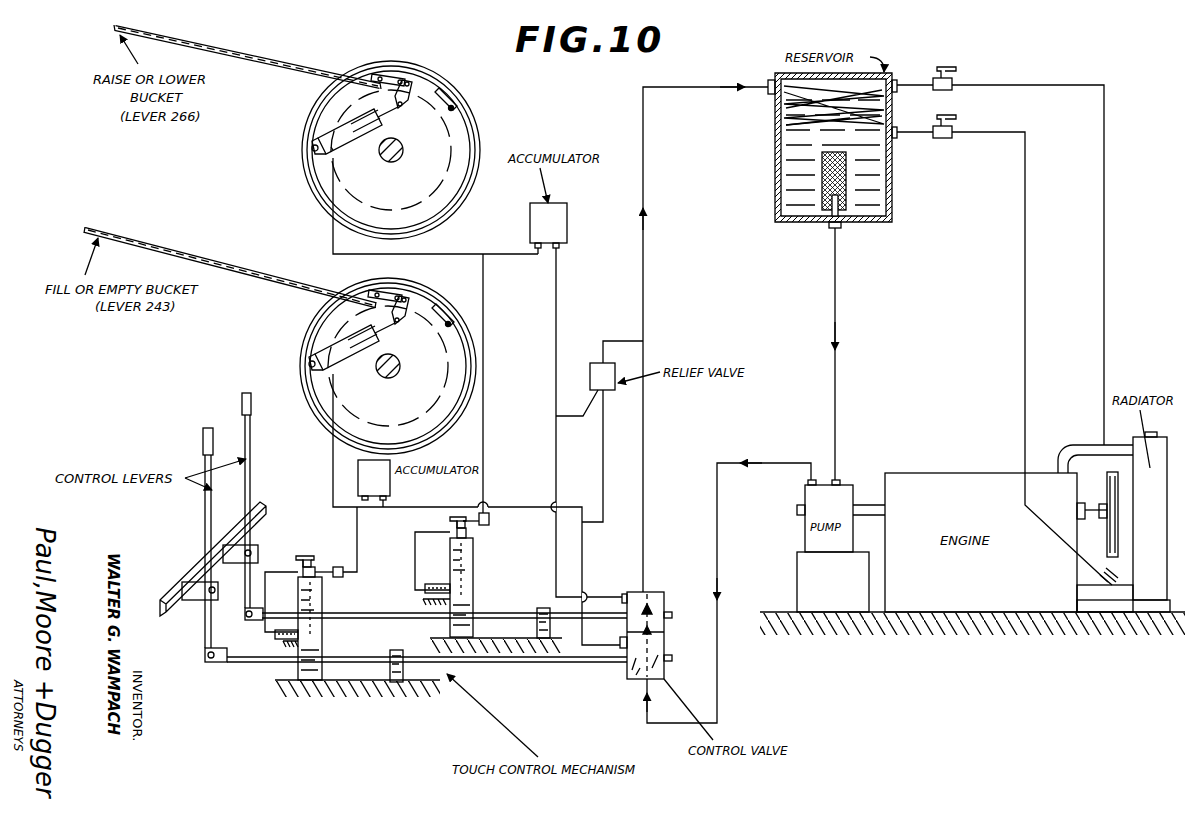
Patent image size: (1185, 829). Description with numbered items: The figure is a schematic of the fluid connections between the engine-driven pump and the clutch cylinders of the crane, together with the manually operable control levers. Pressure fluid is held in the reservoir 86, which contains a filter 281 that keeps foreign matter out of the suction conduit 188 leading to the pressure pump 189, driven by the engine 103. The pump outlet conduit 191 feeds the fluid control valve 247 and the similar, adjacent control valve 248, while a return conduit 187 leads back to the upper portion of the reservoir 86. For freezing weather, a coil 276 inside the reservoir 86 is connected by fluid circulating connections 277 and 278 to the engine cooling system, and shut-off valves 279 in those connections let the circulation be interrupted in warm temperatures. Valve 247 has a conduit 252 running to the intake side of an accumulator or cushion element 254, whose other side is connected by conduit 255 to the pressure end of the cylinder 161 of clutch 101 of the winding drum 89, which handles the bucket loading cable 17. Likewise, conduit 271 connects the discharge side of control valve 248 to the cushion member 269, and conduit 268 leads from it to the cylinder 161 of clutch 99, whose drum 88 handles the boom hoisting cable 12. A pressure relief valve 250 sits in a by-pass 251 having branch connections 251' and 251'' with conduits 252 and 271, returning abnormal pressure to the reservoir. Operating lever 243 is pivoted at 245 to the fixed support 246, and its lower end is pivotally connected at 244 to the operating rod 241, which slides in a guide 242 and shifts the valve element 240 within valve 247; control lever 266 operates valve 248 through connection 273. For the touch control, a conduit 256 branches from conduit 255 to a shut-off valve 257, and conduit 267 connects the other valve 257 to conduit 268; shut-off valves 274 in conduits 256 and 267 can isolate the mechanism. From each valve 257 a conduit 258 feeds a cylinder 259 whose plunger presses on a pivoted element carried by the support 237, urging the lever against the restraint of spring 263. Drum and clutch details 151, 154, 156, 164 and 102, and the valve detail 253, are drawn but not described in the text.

The boom hoisting cable 12 is at (215, 48).
The bucket loading cable 17 is at (105, 230).
The clutch 99 is at (467, 95).
The winding drum 88 is at (455, 149).
The drum rim 151 is at (323, 89).
The lever plate 154 is at (388, 57).
The actuating lever 156 is at (428, 74).
The clutch cylinder 161 is at (325, 125).
The piston rod 164 is at (407, 130).
The drum shaft 102 is at (393, 160).
The clutch 101 is at (470, 323).
The winding drum 89 is at (452, 371).
The conduit 268 is at (453, 254).
The conduit 267 is at (487, 470).
The accumulator 269 is at (546, 206).
The conduit 271 is at (560, 275).
The return conduit 187 is at (646, 165).
The fluid supply reservoir 86 is at (896, 211).
The filter 281 is at (820, 185).
The coil 276 is at (868, 132).
The shut-off valves 279 is at (953, 124).
The fluid circulating connection 277 is at (1106, 250).
The fluid circulating connection 278 is at (1027, 307).
The suction conduit 188 is at (838, 385).
The pressure pump 189 is at (842, 500).
The outlet conduit 191 is at (756, 462).
The engine 103 is at (991, 576).
The pressure relief valve 250 is at (607, 368).
The by-pass 251 is at (621, 338).
The branch connection 251' is at (613, 456).
The branch connection 251'' is at (579, 419).
The conduit 255 is at (331, 475).
The accumulator 254 is at (393, 482).
The conduit 256 is at (355, 524).
The conduit 252 is at (584, 548).
The shut-off valves 274 is at (341, 577).
The shut-off valve 257 is at (312, 565).
The support 237 is at (322, 633).
The conduit 258 is at (415, 566).
The cylinder 259 is at (276, 636).
The spring 263 is at (286, 650).
The connection 273 is at (377, 615).
The operating rod 241 is at (484, 665).
The guide 242 is at (412, 672).
The control valve 248 is at (656, 604).
The valve element 240 is at (672, 614).
The valve port 253 is at (619, 643).
The fluid control valve 247 is at (640, 676).
The control lever 266 is at (243, 395).
The operating lever 243 is at (205, 432).
The pivot 245 is at (208, 600).
The pivotal connection 244 is at (208, 660).
The fixed support 246 is at (186, 582).